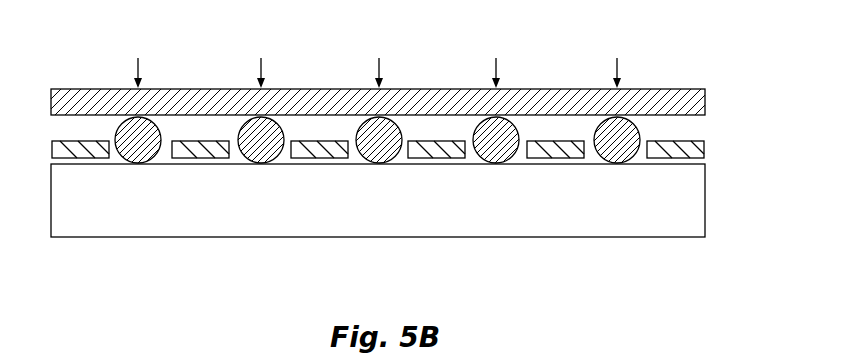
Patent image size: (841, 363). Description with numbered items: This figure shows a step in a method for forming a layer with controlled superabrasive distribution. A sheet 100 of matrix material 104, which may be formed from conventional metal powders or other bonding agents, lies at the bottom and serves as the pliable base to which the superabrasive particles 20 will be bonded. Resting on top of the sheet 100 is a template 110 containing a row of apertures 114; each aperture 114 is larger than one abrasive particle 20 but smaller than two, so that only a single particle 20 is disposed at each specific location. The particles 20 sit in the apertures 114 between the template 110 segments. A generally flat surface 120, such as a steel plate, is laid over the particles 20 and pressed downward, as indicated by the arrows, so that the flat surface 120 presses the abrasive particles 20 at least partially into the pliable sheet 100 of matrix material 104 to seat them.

The generally flat surface 120 is at (78, 88).
The apertures 114 is at (429, 134).
The template 110 is at (705, 147).
The sheet 100 is at (688, 193).
The matrix material 104 is at (358, 222).
The superabrasive particles 20 is at (128, 163).